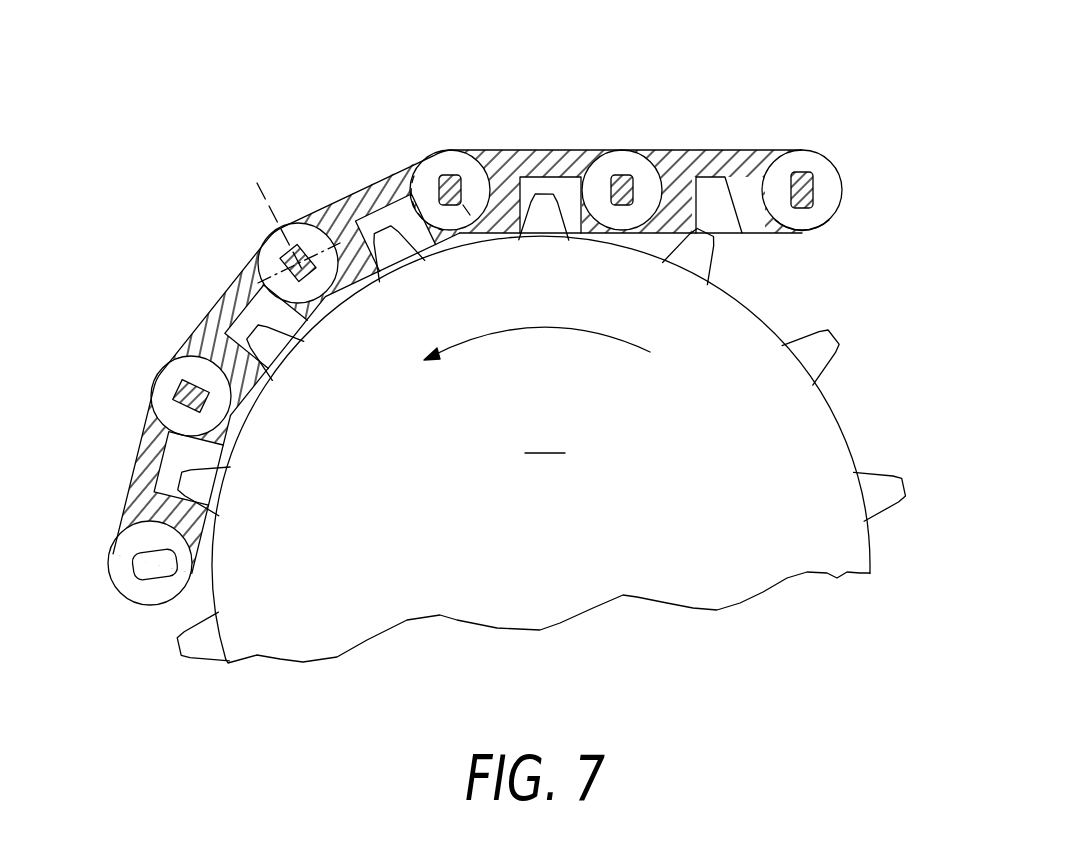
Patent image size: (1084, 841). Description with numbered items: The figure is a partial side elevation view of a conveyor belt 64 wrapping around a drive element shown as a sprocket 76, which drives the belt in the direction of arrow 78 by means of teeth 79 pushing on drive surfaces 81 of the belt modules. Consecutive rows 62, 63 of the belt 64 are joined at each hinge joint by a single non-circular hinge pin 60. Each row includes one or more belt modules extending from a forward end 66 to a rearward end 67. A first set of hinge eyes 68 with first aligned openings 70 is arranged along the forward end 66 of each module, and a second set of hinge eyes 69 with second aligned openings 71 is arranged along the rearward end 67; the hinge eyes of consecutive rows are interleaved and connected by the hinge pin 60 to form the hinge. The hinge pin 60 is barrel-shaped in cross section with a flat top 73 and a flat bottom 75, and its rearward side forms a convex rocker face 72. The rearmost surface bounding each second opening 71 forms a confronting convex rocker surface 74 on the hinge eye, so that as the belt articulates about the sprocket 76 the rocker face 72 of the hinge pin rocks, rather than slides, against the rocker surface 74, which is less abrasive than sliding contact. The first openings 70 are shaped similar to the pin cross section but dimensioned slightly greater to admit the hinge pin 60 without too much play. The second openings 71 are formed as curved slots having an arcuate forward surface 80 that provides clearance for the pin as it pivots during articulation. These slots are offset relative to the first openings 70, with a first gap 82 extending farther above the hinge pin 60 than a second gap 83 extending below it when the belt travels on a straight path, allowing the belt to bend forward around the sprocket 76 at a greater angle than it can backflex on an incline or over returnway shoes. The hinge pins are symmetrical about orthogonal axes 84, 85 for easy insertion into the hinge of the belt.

The hinge pin 60 is at (630, 175).
The row 62 is at (738, 165).
The row 63 is at (557, 153).
The belt 64 is at (245, 268).
The forward end 66 is at (145, 605).
The rearward end 67 is at (833, 212).
The first set of hinge eyes 68 is at (128, 540).
The second set of hinge eyes 69 is at (825, 188).
The first aligned openings 70 is at (142, 565).
The second aligned openings 71 is at (213, 398).
The convex rocker face 72 is at (473, 165).
The flat top 73 is at (445, 152).
The convex rocker surface 74 is at (478, 210).
The flat bottom 75 is at (463, 207).
The sprocket 76 is at (541, 428).
The arrow 78 is at (583, 336).
The teeth 79 is at (205, 493).
The arcuate forward surface 80 is at (190, 398).
The drive surfaces 81 is at (688, 212).
The first gap 82 is at (800, 172).
The second gap 83 is at (802, 228).
The orthogonal axis 84 is at (333, 333).
The orthogonal axis 85 is at (203, 312).